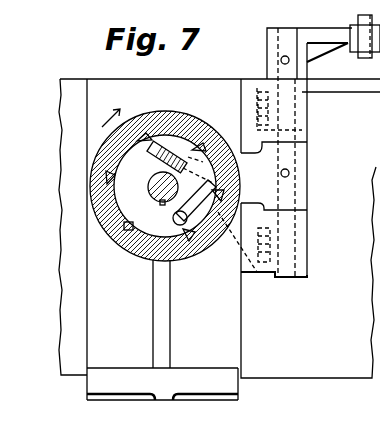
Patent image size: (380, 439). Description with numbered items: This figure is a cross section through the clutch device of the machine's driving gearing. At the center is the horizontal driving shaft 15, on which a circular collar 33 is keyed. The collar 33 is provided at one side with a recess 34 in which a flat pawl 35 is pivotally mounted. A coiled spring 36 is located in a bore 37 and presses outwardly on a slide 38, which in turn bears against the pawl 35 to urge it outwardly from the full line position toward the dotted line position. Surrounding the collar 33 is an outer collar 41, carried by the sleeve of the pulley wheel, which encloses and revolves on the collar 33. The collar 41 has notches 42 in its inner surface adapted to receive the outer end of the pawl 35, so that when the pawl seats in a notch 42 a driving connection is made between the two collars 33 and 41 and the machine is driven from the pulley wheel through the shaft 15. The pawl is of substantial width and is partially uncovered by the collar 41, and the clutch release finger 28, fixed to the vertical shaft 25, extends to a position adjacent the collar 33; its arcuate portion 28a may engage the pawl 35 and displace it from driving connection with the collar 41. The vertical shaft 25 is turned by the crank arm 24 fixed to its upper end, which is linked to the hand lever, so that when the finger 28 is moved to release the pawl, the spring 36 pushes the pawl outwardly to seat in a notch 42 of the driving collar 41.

The driving shaft 15 is at (147, 191).
The crank arm 24 is at (337, 40).
The vertical shaft 25 is at (297, 108).
The clutch release finger 28 is at (248, 177).
The arcuate portion 28a is at (262, 273).
The circular collar 33 is at (128, 183).
The recess 34 is at (240, 222).
The flat pawl 35 is at (214, 186).
The coiled spring 36 is at (178, 138).
The bore 37 is at (206, 132).
The slide 38 is at (296, 152).
The collar 41 is at (140, 262).
The notches 42 is at (110, 177).